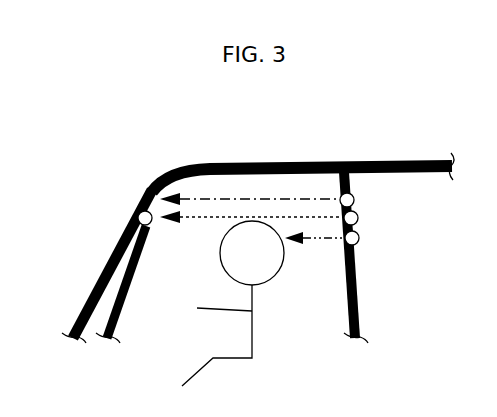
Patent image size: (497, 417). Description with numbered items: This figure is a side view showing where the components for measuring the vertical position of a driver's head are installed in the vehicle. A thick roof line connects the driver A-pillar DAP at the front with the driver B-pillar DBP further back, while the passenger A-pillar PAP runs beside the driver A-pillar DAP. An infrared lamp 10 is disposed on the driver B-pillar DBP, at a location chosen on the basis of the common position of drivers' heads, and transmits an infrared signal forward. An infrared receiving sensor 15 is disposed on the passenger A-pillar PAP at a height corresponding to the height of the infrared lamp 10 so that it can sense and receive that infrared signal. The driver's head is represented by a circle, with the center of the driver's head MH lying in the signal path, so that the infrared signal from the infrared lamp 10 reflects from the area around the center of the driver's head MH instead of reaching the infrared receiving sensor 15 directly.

The driver A-pillar DAP is at (102, 268).
The passenger A-pillar PAP is at (127, 300).
The driver B-pillar DBP is at (360, 282).
The center of the driver's head MH is at (274, 278).
The infrared receiving sensor 15 is at (150, 224).
The infrared lamp 10 is at (359, 238).